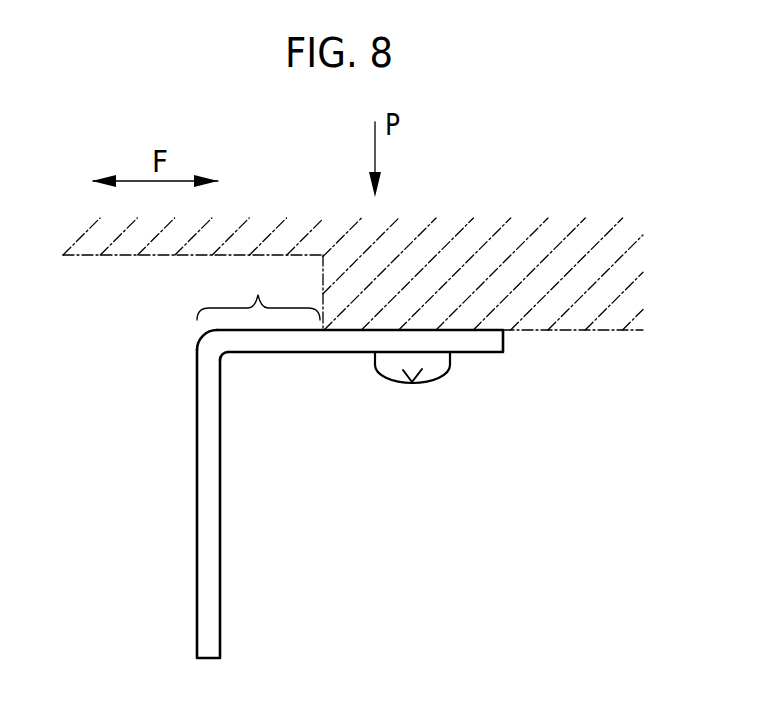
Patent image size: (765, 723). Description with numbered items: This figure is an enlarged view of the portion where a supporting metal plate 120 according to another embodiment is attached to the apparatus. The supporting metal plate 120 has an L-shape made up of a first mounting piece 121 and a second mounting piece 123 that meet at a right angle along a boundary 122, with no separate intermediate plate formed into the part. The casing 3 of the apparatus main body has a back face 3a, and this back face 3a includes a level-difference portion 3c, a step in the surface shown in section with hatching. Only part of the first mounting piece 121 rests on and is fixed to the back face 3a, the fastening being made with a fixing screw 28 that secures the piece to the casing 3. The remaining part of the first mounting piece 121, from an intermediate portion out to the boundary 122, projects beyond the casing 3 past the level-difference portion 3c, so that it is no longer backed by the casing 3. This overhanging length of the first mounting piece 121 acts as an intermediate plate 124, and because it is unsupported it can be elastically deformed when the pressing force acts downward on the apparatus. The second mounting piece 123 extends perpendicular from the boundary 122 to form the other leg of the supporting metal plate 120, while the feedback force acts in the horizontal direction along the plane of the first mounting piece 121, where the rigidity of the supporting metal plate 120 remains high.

The casing 3 is at (121, 257).
The back face 3a is at (568, 331).
The level-difference portion 3c is at (320, 273).
The fixing screw 28 is at (428, 376).
The supporting metal plate 120 is at (303, 494).
The first mounting piece 121 is at (478, 343).
The boundary 122 is at (197, 337).
The second mounting piece 123 is at (205, 553).
The intermediate plate 124 is at (258, 292).